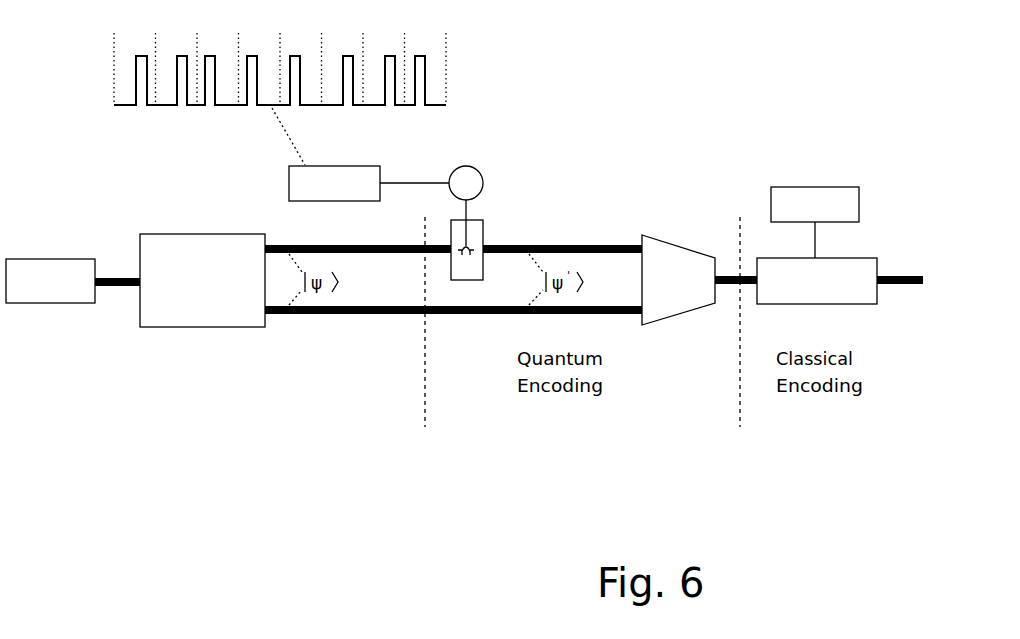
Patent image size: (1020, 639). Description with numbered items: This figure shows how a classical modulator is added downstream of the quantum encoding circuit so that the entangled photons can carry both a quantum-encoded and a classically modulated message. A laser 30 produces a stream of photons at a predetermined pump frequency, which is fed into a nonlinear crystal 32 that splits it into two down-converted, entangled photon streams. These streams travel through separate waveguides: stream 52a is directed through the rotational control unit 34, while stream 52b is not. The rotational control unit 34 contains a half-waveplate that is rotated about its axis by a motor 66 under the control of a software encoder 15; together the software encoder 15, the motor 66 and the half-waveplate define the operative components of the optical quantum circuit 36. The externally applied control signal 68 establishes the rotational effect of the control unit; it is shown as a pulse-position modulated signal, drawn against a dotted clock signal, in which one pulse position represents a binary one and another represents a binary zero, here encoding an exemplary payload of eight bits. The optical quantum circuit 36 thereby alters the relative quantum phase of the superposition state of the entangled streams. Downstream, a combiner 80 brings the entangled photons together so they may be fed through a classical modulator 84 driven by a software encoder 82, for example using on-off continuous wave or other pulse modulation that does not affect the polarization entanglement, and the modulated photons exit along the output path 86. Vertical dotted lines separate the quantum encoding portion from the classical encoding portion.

The control signal 68 is at (160, 107).
The software encoder 15 is at (366, 166).
The motor 66 is at (479, 172).
The rotational control unit 34 is at (484, 226).
The laser 30 is at (82, 265).
The nonlinear crystal 32 is at (208, 242).
The stream 52a is at (406, 253).
The stream 52b is at (388, 314).
The optical quantum circuit 36 is at (578, 218).
The combiner 80 is at (679, 241).
The software encoder 82 is at (792, 187).
The classical modulator 84 is at (853, 258).
The output channel 86 is at (910, 284).